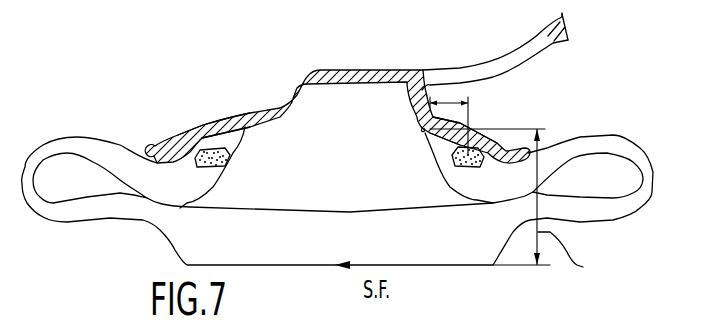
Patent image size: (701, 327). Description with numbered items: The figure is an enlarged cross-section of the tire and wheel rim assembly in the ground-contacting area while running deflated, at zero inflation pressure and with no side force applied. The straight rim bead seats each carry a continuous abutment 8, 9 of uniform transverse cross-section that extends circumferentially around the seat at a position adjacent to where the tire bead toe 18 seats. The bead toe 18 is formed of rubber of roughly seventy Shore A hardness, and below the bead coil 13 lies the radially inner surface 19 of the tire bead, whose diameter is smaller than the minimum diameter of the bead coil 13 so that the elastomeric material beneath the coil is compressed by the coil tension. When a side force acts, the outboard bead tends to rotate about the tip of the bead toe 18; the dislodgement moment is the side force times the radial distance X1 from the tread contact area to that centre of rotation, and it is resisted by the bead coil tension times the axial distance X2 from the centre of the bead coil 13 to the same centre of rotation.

The continuous abutment 8 is at (253, 127).
The continuous abutment 9 is at (423, 130).
The bead coil 13 is at (450, 173).
The bead toe 18 is at (236, 136).
The radially inner surface of the tire bead 19 is at (203, 126).
The radial distance X1 is at (545, 167).
The axial distance X2 is at (455, 104).